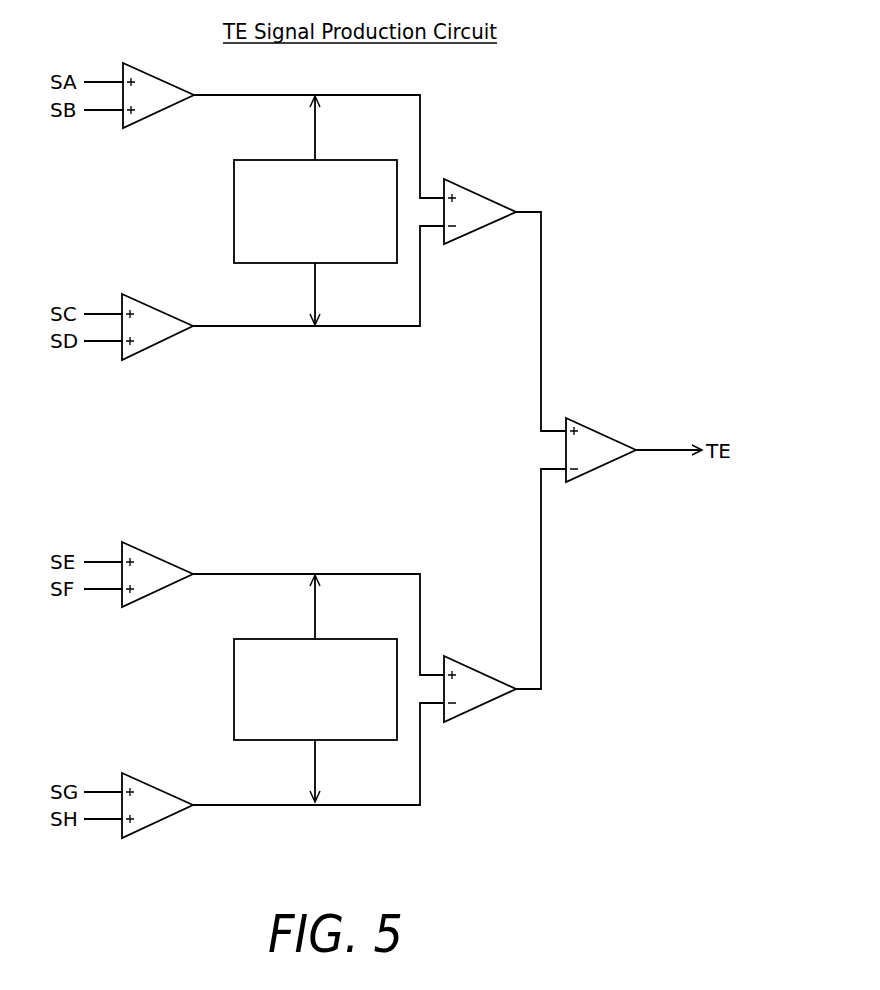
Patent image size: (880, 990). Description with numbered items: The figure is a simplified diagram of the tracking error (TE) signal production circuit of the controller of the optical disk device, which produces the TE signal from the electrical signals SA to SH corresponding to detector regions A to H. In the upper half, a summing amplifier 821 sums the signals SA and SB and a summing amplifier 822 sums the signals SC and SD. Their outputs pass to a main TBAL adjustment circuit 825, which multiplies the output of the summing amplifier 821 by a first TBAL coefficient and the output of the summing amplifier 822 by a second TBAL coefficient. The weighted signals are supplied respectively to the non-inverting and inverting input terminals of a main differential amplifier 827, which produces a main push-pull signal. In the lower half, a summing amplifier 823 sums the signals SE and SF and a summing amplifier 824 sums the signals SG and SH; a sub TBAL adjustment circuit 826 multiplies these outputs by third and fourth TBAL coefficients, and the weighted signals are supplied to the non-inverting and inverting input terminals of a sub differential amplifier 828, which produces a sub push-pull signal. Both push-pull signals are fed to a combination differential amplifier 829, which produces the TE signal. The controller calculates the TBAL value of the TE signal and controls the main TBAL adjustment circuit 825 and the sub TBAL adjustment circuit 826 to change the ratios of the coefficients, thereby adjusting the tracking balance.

The summing amplifier 821 is at (163, 75).
The summing amplifier 822 is at (163, 306).
The summing amplifier 823 is at (163, 554).
The summing amplifier 824 is at (163, 785).
The main TBAL adjustment circuit 825 is at (367, 160).
The sub TBAL adjustment circuit 826 is at (367, 639).
The main differential amplifier 827 is at (487, 191).
The sub differential amplifier 828 is at (487, 667).
The combination differential amplifier 829 is at (605, 418).